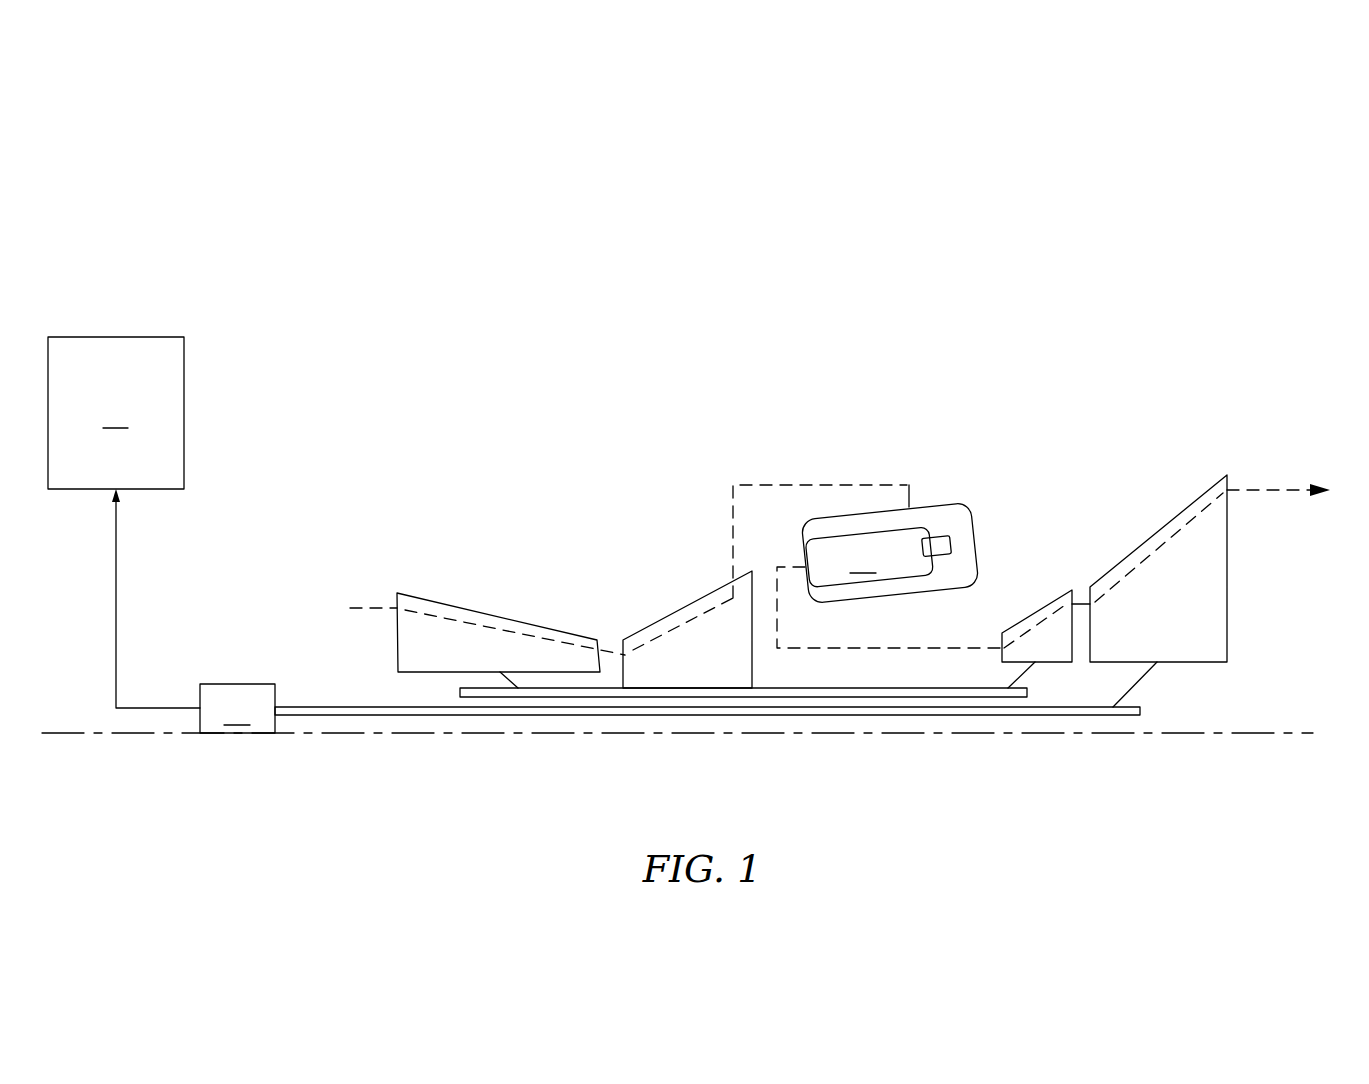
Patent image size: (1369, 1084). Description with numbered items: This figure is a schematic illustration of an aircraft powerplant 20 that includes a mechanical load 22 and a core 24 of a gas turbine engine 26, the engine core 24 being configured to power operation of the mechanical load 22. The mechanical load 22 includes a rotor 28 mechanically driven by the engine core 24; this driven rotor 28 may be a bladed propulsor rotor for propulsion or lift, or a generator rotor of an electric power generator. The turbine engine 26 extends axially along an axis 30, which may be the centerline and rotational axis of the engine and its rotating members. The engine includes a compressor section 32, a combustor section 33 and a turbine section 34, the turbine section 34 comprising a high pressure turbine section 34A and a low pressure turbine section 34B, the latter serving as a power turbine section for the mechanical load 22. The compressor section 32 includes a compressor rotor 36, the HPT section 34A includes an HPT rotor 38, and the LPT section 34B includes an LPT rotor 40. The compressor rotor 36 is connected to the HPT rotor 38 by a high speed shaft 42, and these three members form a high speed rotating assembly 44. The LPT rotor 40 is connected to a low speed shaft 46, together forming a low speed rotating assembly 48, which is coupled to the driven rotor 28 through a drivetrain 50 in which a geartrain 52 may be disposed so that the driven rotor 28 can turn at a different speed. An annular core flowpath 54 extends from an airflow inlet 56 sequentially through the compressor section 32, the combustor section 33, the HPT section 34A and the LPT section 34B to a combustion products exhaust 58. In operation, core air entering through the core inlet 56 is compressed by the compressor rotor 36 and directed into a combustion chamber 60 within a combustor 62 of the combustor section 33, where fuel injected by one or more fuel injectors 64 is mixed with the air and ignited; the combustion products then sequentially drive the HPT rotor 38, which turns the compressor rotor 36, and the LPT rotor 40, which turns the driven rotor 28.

The aircraft powerplant 20 is at (228, 185).
The mechanical load 22 is at (116, 355).
The engine core 24 is at (848, 340).
The gas turbine engine 26 is at (1030, 205).
The rotor 28 is at (114, 412).
The axis 30 is at (68, 737).
The compressor section 32 is at (753, 440).
The combustor section 33 is at (890, 422).
The turbine section 34 is at (1114, 483).
The high pressure turbine section 34A is at (1042, 517).
The low pressure turbine section 34B is at (1154, 517).
The compressor rotor 36 is at (572, 633).
The high pressure turbine rotor 38 is at (1037, 612).
The low pressure turbine rotor 40 is at (1158, 562).
The high speed shaft 42 is at (782, 697).
The high speed rotating assembly 44 is at (1052, 683).
The low speed shaft 46 is at (845, 717).
The low speed rotating assembly 48 is at (1163, 691).
The drivetrain 50 is at (236, 655).
The geartrain 52 is at (236, 709).
The core flowpath 54 is at (733, 510).
The airflow inlet 56 is at (350, 608).
The combustion products exhaust 58 is at (1330, 490).
The combustion chamber 60 is at (905, 535).
The combustor 62 is at (870, 602).
The fuel injector 64 is at (953, 547).